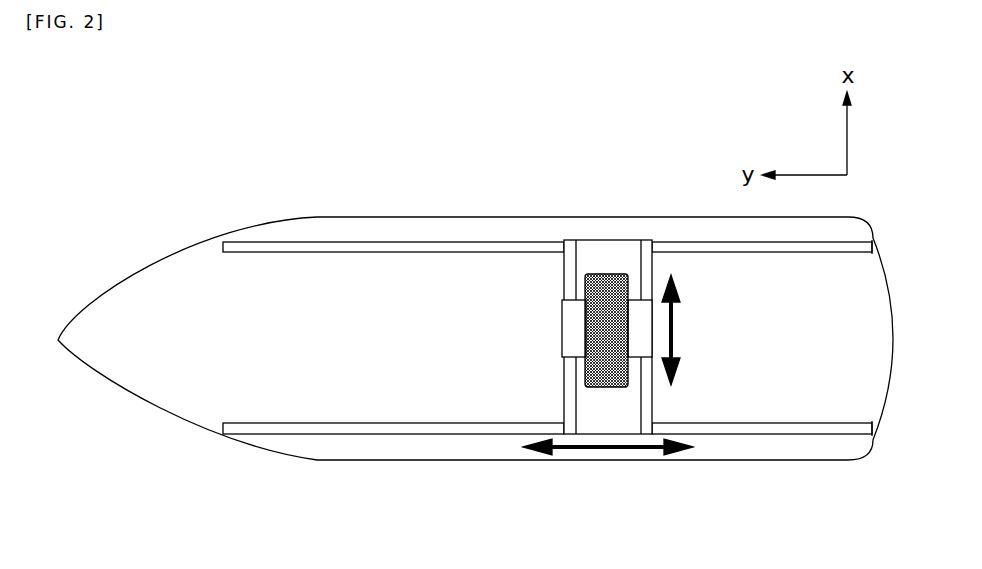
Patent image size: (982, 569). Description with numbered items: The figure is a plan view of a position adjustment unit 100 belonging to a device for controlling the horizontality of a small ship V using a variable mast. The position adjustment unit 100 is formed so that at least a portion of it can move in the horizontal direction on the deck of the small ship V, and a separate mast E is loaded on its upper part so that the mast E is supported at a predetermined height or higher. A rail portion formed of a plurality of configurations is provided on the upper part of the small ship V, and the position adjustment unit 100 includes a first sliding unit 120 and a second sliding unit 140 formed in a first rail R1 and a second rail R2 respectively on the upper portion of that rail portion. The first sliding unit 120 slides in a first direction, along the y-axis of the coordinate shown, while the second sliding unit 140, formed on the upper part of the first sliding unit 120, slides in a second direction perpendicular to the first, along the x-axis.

The position adjustment unit 100 is at (626, 312).
The first sliding unit 120 is at (592, 252).
The second sliding unit 140 is at (575, 328).
The mast E is at (610, 278).
The small ship V is at (172, 392).
The first rail R1 is at (483, 430).
The second rail R2 is at (650, 398).